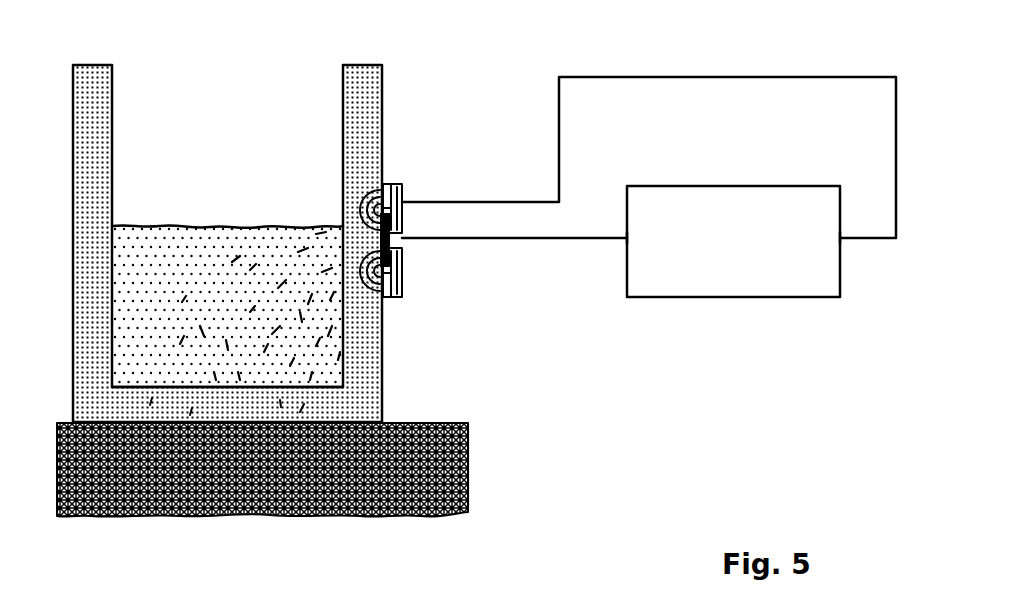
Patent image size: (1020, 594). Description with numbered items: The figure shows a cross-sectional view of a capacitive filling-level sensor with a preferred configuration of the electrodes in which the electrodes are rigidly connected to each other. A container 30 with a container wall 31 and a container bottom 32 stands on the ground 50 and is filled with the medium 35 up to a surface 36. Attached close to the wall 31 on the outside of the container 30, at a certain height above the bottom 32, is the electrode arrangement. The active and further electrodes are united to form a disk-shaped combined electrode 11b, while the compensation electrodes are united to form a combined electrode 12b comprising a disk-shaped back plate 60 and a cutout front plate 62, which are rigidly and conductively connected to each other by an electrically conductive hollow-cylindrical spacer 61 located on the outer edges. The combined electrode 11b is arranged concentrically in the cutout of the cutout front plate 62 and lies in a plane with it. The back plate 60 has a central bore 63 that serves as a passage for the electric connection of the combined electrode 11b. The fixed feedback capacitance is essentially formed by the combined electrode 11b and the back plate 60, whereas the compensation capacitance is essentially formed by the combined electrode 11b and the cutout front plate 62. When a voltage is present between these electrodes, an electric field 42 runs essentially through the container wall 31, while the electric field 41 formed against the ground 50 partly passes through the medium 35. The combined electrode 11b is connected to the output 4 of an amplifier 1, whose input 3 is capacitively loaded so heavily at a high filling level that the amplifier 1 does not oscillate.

The amplifier 1 is at (740, 249).
The input of the amplifier 3 is at (635, 239).
The output of the amplifier 4 is at (828, 239).
The combined electrode 11b is at (402, 224).
The combined electrode 12b is at (414, 168).
The container 30 is at (231, 101).
The container wall 31 is at (92, 72).
The container bottom 32 is at (243, 414).
The medium 35 is at (178, 267).
The liquid surface 36 is at (152, 224).
The electric field 41 is at (288, 342).
The electric field 42 is at (352, 200).
The ground 50 is at (452, 471).
The back plate 60 is at (404, 196).
The spacer 61 is at (400, 183).
The cutout front plate 62 is at (394, 183).
The central bore 63 is at (403, 246).